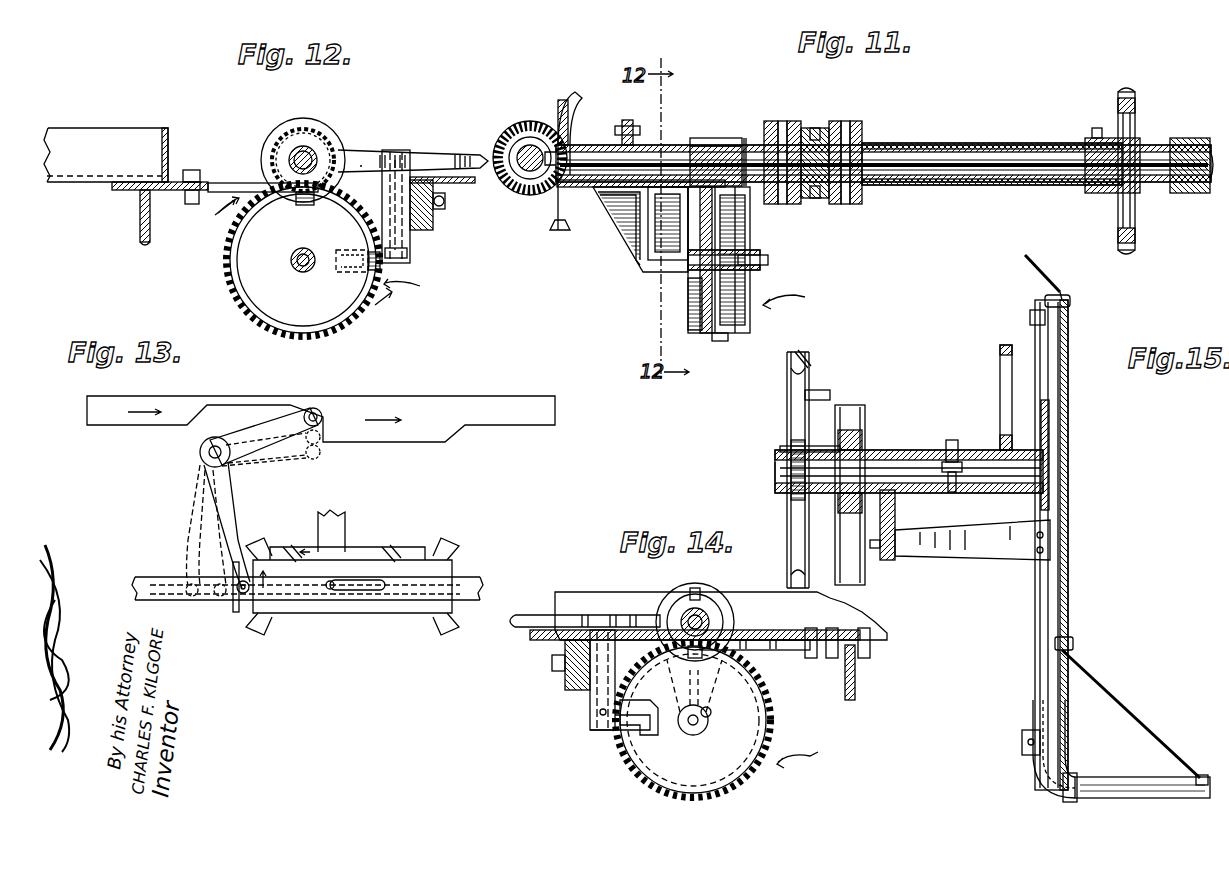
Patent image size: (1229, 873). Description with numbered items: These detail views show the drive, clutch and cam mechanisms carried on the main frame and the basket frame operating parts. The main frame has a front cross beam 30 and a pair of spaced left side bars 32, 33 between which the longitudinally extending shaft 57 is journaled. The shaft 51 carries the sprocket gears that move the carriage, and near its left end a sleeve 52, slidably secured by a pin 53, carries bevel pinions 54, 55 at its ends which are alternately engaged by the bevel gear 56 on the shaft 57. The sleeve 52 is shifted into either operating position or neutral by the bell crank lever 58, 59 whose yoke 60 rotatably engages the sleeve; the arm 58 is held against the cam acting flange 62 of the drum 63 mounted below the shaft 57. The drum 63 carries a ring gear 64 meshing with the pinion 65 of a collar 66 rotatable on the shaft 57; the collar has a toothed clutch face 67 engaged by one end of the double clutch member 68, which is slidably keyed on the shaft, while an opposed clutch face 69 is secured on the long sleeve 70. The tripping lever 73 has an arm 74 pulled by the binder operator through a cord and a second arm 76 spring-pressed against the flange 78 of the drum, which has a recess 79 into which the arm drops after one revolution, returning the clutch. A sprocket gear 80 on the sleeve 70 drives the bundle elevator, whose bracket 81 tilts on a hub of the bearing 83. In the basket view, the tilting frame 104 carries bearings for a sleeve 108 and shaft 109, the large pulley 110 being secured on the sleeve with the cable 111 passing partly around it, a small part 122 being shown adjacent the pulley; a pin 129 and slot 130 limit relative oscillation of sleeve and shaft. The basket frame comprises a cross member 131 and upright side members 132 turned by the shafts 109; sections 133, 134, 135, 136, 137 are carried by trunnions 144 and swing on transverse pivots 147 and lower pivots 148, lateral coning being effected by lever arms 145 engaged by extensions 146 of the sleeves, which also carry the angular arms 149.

In FIG. 12, the front cross beam 30 is at (138, 142).
In FIG. 11, the front cross beam 30 is at (630, 125).
In FIG. 14, the front cross beam 30 is at (762, 592).
In FIG. 12, the left side bar 32 is at (143, 240).
In FIG. 14, the left side bar 32 is at (856, 692).
In FIG. 12, the left side bar 33 is at (440, 216).
In FIG. 14, the left side bar 33 is at (568, 692).
In FIG. 11, the shaft 51 is at (530, 126).
In FIG. 13, the shaft 51 is at (466, 578).
In FIG. 11, the sleeve 52 is at (505, 138).
In FIG. 13, the sleeve 52 is at (360, 605).
In FIG. 12, the pin 53 is at (478, 187).
In FIG. 11, the pin 53 is at (505, 175).
In FIG. 13, the pin 53 is at (330, 590).
In FIG. 11, the bevel pinion 54 is at (500, 150).
In FIG. 13, the bevel pinion 54 is at (257, 595).
In FIG. 13, the bevel pinion 55 is at (444, 598).
In FIG. 11, the bevel gear 56 is at (566, 100).
In FIG. 13, the bevel gear 56 is at (390, 548).
In FIG. 12, the shaft 57 is at (312, 150).
In FIG. 11, the shaft 57 is at (610, 160).
In FIG. 13, the shaft 57 is at (333, 522).
In FIG. 14, the shaft 57 is at (712, 618).
In FIG. 12, the bell crank lever arm 58 is at (245, 183).
In FIG. 11, the bell crank lever arm 58 is at (688, 200).
In FIG. 13, the bell crank lever arm 58 is at (285, 422).
In FIG. 14, the bell crank lever arm 58 is at (776, 650).
In FIG. 13, the bell crank lever arm 59 is at (232, 504).
In FIG. 13, the yoke 60 is at (240, 595).
In FIG. 12, the cam acting flange 62 is at (270, 322).
In FIG. 11, the cam acting flange 62 is at (694, 310).
In FIG. 13, the cam acting flange 62 is at (321, 424).
In FIG. 12, the drum 63 is at (401, 294).
In FIG. 11, the drum 63 is at (788, 291).
In FIG. 14, the drum 63 is at (805, 752).
In FIG. 12, the ring gear 64 is at (322, 328).
In FIG. 11, the ring gear 64 is at (722, 341).
In FIG. 14, the ring gear 64 is at (776, 718).
In FIG. 12, the pinion 65 is at (322, 135).
In FIG. 11, the pinion 65 is at (712, 138).
In FIG. 11, the collar 66 is at (745, 138).
In FIG. 12, the toothed clutch face 67 is at (290, 120).
In FIG. 11, the toothed clutch face 67 is at (772, 120).
In FIG. 11, the double clutch member 68 is at (838, 120).
In FIG. 14, the double clutch member 68 is at (700, 598).
In FIG. 11, the clutch face 69 is at (858, 125).
In FIG. 11, the long sleeve 70 is at (990, 145).
In FIG. 12, the tripping lever 73 is at (362, 158).
In FIG. 14, the tripping lever 73 is at (640, 615).
In FIG. 12, the lever arm 74 is at (437, 156).
In FIG. 14, the lever arm 74 is at (527, 618).
In FIG. 12, the lever arm 76 is at (410, 258).
In FIG. 14, the lever arm 76 is at (612, 730).
In FIG. 11, the flange 78 is at (750, 323).
In FIG. 14, the flange 78 is at (742, 778).
In FIG. 14, the recess 79 is at (648, 728).
In FIG. 11, the sprocket gear 80 is at (1132, 222).
In FIG. 11, the bracket 81 is at (1178, 138).
In FIG. 11, the bearing 83 is at (1140, 140).
In FIG. 15, the tilting frame 104 is at (855, 572).
In FIG. 15, the sleeve 108 is at (908, 450).
In FIG. 15, the shaft 109 is at (778, 470).
In FIG. 15, the large pulley 110 is at (808, 360).
In FIG. 15, the cable 111 is at (796, 352).
In FIG. 15, the stud 122 is at (830, 393).
In FIG. 15, the pin 129 is at (956, 443).
In FIG. 15, the slot 130 is at (960, 460).
In FIG. 15, the cross member 131 is at (1115, 778).
In FIG. 15, the upright side member 132 is at (1035, 688).
In FIG. 15, the basket section 133 is at (1040, 262).
In FIG. 15, the basket section 134 is at (1068, 368).
In FIG. 15, the basket section 135 is at (1068, 452).
In FIG. 15, the basket section 136 is at (1092, 676).
In FIG. 15, the basket section 137 is at (1200, 774).
In FIG. 15, the trunnion 144 is at (1030, 315).
In FIG. 15, the lever arm 145 is at (998, 540).
In FIG. 15, the extension 146 is at (896, 518).
In FIG. 15, the transverse pivot 147 is at (1072, 301).
In FIG. 15, the pivot 148 is at (1073, 642).
In FIG. 15, the arm 149 is at (1002, 378).